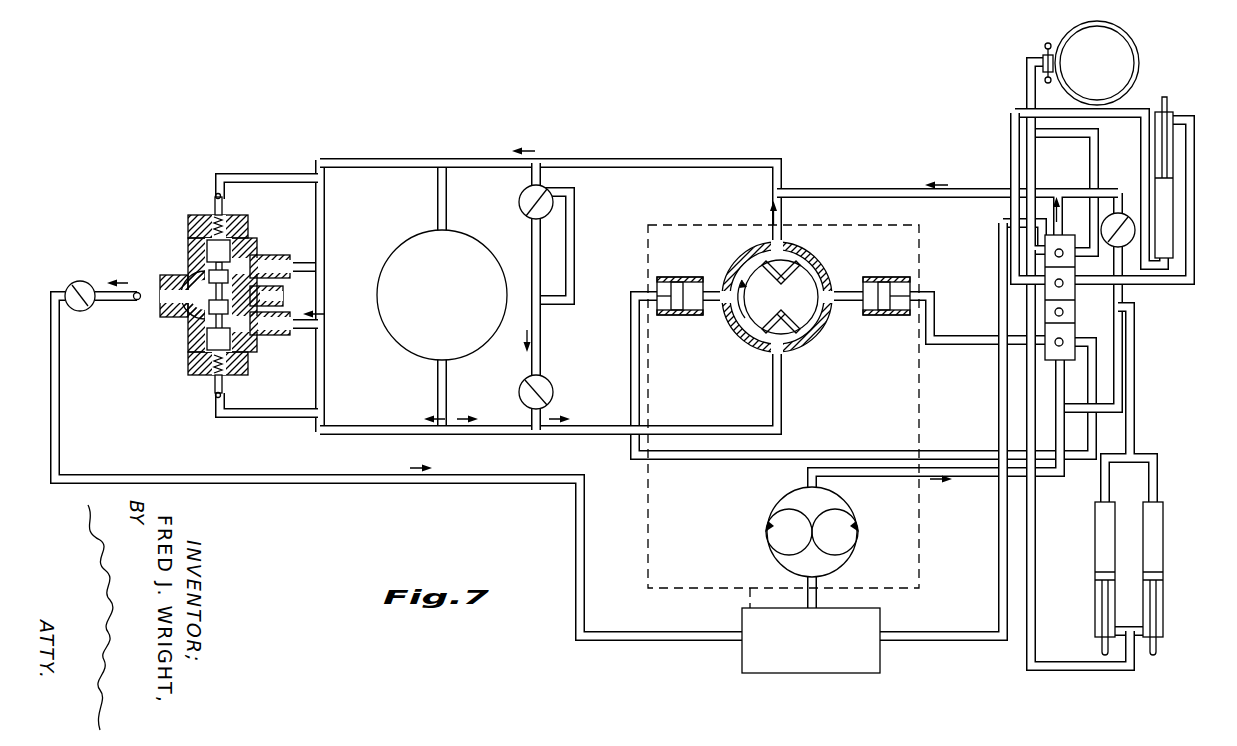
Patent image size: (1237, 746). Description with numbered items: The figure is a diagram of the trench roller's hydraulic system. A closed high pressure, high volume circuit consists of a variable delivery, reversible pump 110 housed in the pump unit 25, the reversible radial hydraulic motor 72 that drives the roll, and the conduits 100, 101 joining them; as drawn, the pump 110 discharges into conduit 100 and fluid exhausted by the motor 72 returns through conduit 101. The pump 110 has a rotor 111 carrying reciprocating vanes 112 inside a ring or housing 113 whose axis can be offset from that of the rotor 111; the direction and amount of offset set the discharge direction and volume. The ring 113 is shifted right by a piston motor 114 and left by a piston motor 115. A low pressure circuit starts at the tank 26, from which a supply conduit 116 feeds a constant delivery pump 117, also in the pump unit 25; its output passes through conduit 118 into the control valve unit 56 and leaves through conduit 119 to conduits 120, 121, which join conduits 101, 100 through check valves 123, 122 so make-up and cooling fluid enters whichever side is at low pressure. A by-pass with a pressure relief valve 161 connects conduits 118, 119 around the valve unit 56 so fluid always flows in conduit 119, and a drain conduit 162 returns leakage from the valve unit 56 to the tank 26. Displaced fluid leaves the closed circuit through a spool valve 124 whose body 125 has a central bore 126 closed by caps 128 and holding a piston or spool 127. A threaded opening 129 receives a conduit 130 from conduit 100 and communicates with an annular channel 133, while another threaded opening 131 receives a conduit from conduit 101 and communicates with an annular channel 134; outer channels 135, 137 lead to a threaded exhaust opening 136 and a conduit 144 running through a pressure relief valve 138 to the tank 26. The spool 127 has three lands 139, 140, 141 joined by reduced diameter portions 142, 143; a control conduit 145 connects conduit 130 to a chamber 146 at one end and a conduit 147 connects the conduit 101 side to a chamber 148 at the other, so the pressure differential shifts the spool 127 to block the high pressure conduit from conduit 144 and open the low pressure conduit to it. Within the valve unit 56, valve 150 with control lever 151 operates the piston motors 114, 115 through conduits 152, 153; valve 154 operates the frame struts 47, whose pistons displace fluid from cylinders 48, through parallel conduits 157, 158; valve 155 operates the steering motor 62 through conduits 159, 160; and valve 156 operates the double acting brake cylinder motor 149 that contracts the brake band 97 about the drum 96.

The pump unit 25 is at (919, 521).
The tank 26 is at (811, 641).
The frame struts 47 is at (1148, 571).
The cylinders 48 is at (1129, 577).
The control valve unit 56 is at (1032, 319).
The steering motor 62 is at (1173, 219).
The hydraulic motor 72 is at (442, 295).
The drum 96 is at (1139, 58).
The brake band 97 is at (1135, 43).
The conduit 100 is at (625, 158).
The conduit 101 is at (438, 389).
The pump 110 is at (764, 304).
The rotor 111 is at (796, 262).
The vanes 112 is at (748, 258).
The ring or housing 113 is at (731, 276).
The piston motor 114 is at (886, 316).
The piston motor 115 is at (681, 316).
The supply conduit 116 is at (815, 598).
The pump 117 is at (840, 564).
The conduit 118 is at (893, 477).
The conduit 119 is at (893, 190).
The conduit 120 is at (541, 333).
The conduit 121 is at (533, 251).
The check valve 122 is at (519, 203).
The check valve 123 is at (553, 389).
The spool type valve 124 is at (218, 299).
The body 125 is at (241, 252).
The central bore 126 is at (214, 247).
The piston or spool 127 is at (233, 371).
The caps 128 is at (245, 218).
The threaded opening 129 is at (252, 262).
The conduit 130 is at (370, 158).
The threaded opening 131 is at (262, 332).
The annular channel 133 is at (184, 274).
The annular channel 134 is at (198, 318).
The annular channel 135 is at (208, 266).
The threaded exhaust opening 136 is at (175, 307).
The annular channel 137 is at (218, 317).
The pressure relief valve 138 is at (78, 281).
The land 139 is at (226, 262).
The land 140 is at (325, 368).
The land 141 is at (206, 362).
The reduced diameter portion 142 is at (222, 283).
The reduced diameter portion 143 is at (218, 326).
The conduit 144 is at (288, 483).
The control conduit 145 is at (278, 174).
The chamber 146 is at (210, 238).
The conduit 147 is at (256, 418).
The chamber 148 is at (213, 370).
The brake cylinder motor 149 is at (1043, 62).
The valve 150 is at (1055, 345).
The control lever 151 is at (1054, 352).
The conduit 152 is at (1072, 457).
The conduit 153 is at (952, 340).
The valve 154 is at (1045, 311).
The valve 155 is at (1045, 285).
The valve 156 is at (1045, 258).
The conduit 157 is at (1131, 398).
The conduit 158 is at (1073, 668).
The conduit 159 is at (1171, 282).
The conduit 160 is at (1123, 115).
The pressure relief valve 161 is at (1123, 212).
The conduit 162 is at (1000, 594).